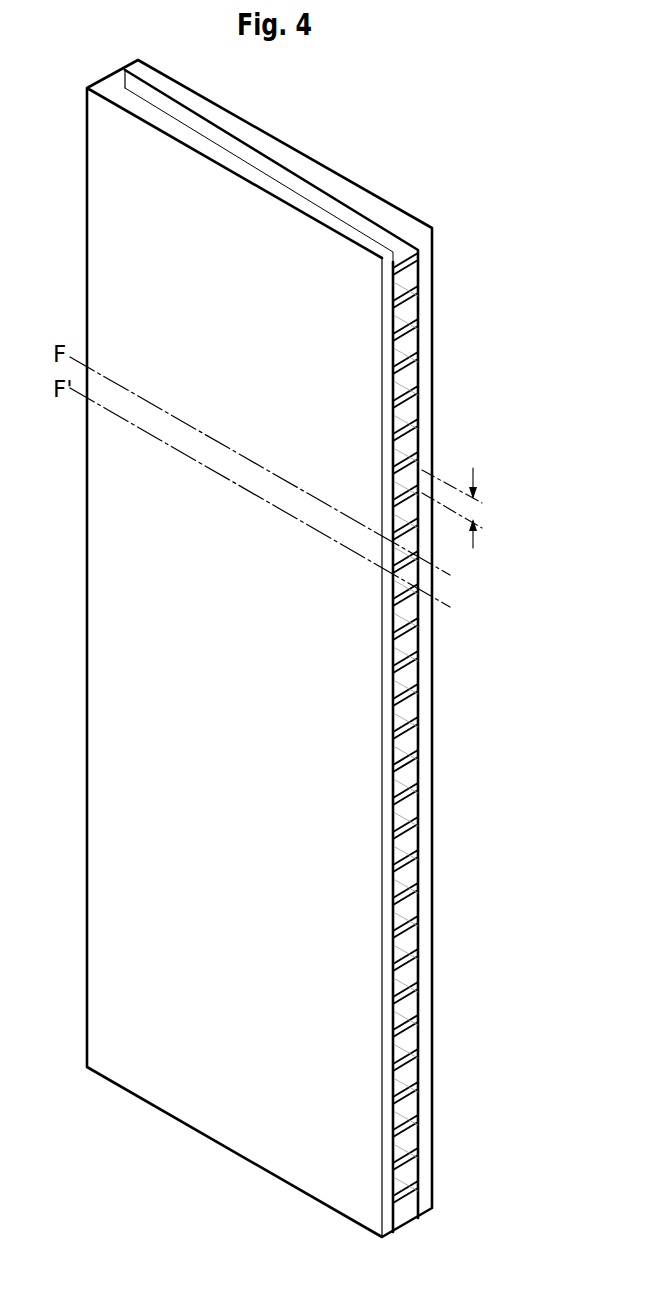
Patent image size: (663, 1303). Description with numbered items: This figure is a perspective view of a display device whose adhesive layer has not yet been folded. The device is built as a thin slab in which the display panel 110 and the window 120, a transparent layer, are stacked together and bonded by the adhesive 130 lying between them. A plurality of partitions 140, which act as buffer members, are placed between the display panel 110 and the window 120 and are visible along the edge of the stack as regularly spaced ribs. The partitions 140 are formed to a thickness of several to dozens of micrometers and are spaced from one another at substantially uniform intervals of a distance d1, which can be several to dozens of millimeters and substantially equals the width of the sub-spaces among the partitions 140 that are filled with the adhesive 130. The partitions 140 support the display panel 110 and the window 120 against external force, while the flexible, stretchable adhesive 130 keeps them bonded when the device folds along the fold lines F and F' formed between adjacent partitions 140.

The display panel 110 is at (428, 248).
The window 120 is at (386, 258).
The adhesive 130 is at (413, 415).
The partitions 140 is at (410, 369).
The distance d1 is at (463, 508).